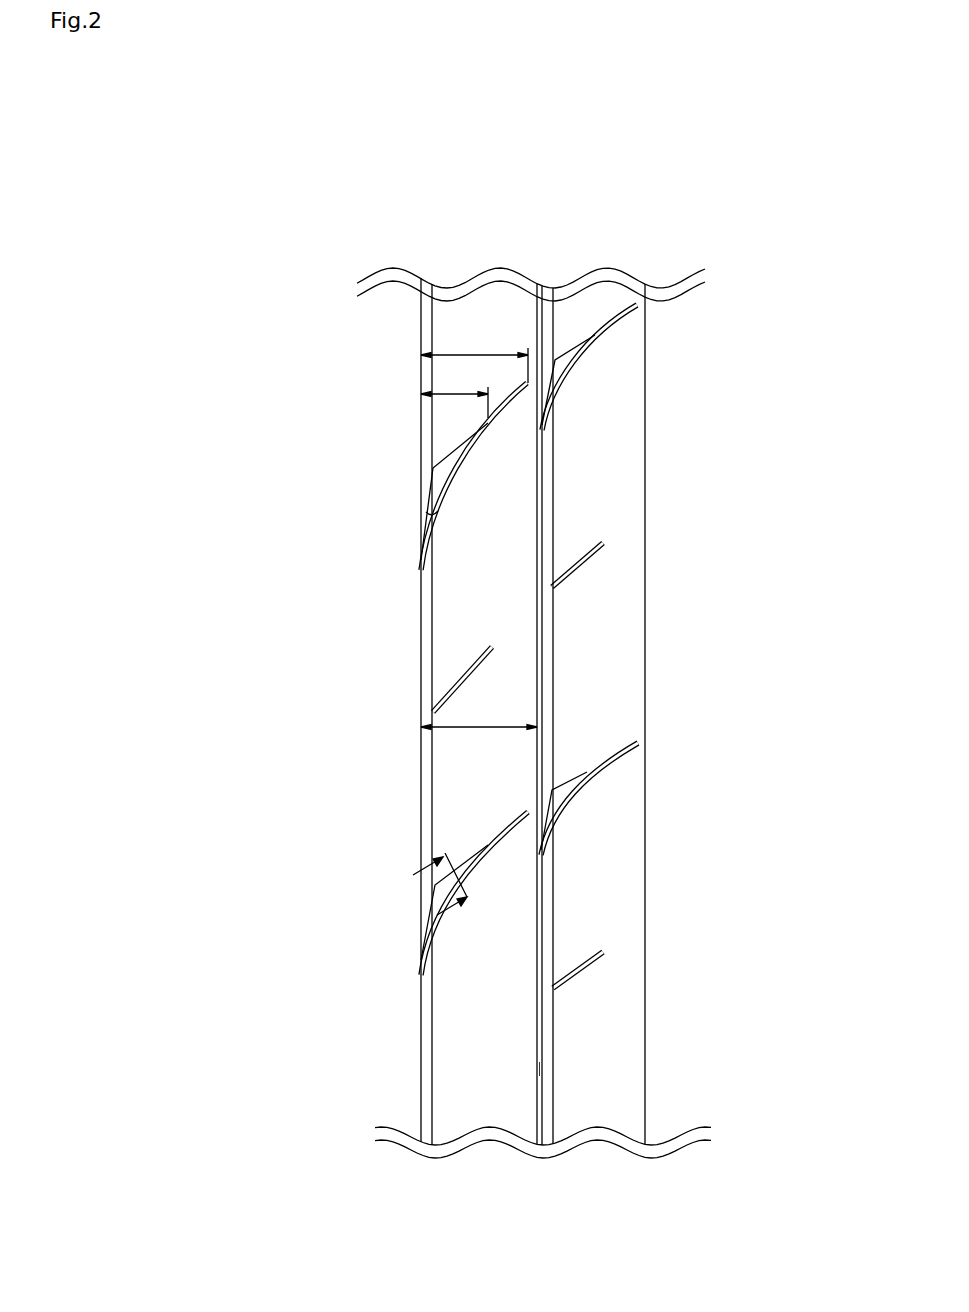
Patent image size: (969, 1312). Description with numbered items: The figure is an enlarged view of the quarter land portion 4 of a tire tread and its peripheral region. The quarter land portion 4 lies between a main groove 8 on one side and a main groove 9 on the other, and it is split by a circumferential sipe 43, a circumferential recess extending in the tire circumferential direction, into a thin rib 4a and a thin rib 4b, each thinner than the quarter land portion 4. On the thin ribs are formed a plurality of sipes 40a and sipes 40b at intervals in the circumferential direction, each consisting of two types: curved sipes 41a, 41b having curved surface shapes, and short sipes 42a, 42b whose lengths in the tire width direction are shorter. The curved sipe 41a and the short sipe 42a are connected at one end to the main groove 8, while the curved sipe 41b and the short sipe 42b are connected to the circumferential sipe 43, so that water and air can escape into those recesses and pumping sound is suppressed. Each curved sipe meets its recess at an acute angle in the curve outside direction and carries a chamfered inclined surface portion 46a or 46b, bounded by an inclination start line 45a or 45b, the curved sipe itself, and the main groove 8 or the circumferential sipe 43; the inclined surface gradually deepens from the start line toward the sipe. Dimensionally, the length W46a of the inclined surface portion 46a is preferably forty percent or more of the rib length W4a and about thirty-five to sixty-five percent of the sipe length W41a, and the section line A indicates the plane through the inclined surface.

The quarter land portion 4 is at (645, 272).
The thin rib 4a is at (540, 1150).
The thin rib 4b is at (647, 1150).
The main groove 8 is at (393, 352).
The main groove 9 is at (663, 350).
The sipes 40a is at (374, 711).
The sipes 40b is at (692, 714).
The curved sipe 41a is at (425, 533).
The curved sipe 41b is at (556, 385).
The short sipe 42a is at (473, 662).
The short sipe 42b is at (587, 560).
The circumferential sipe 43 is at (536, 1069).
The inclination start line 45a is at (440, 459).
The inclination start line 45b is at (585, 345).
The inclined surface portion 46a is at (432, 497).
The inclined surface portion 46b is at (555, 373).
The length in the tire width direction of the curved sipe W41a is at (450, 355).
The length in the tire width direction of the inclined surface portion W46a is at (447, 394).
The length in the tire width direction of the thin rib W4a is at (462, 727).
The section line A- A is at (451, 877).